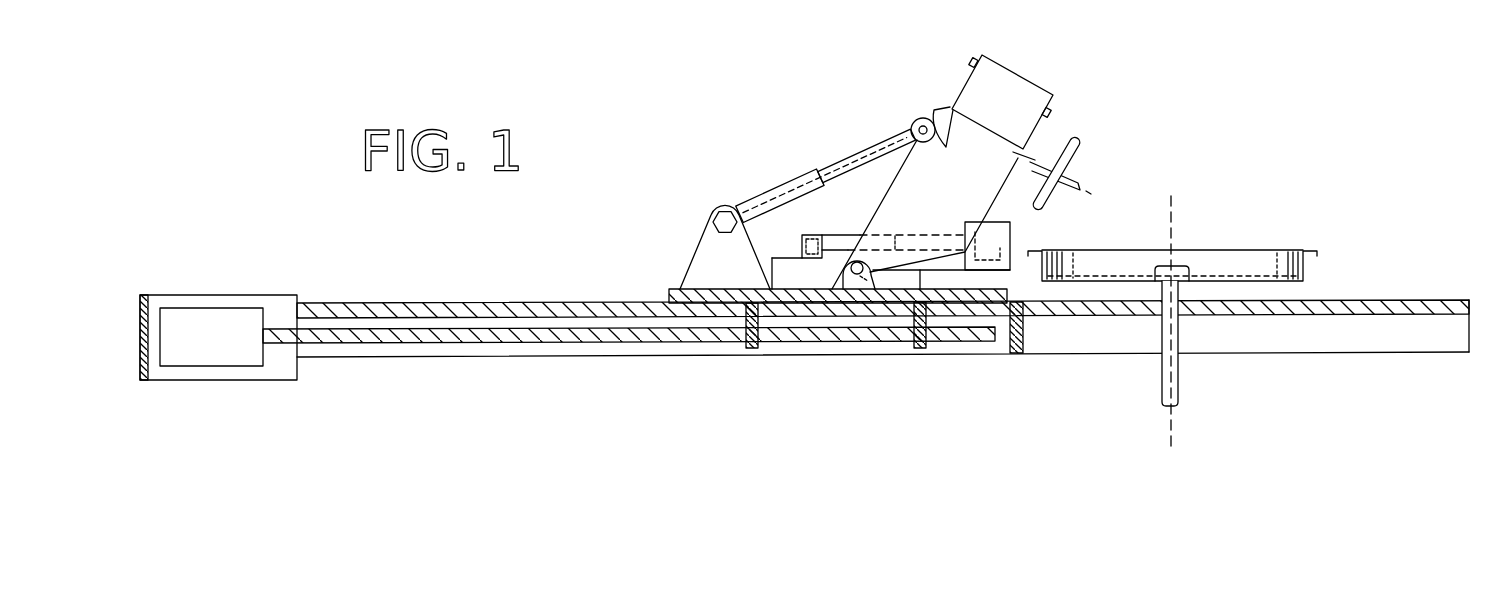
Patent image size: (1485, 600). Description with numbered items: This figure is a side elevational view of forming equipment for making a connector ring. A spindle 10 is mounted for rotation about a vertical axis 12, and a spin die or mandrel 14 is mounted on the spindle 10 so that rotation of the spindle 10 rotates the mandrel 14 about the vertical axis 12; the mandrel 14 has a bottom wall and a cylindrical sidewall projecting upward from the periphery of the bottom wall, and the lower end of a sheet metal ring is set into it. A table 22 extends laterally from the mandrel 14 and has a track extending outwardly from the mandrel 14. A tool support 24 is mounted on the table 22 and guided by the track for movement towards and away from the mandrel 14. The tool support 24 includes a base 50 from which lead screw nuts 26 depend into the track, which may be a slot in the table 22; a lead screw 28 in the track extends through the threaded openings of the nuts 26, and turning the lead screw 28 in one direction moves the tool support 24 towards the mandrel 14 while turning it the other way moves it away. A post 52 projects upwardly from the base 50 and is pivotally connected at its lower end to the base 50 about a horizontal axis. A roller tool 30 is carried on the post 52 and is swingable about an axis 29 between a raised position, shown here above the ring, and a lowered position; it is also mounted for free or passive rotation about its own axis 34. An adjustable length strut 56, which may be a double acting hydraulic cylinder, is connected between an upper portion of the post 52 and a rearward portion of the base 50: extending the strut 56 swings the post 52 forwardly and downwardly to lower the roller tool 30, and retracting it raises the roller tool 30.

The spindle 10 is at (1178, 390).
The vertical axis 12 is at (1173, 258).
The spin die or mandrel 14 is at (1320, 265).
The table 22 is at (469, 298).
The tool support 24 is at (868, 99).
The lead screw nuts 26 is at (727, 356).
The lead screw 28 is at (425, 344).
The axis 29 is at (855, 276).
The roller tool 30 is at (1080, 152).
The axis 34 is at (1078, 183).
The base 50 is at (688, 285).
The post 52 is at (938, 108).
The adjustable length strut 56 is at (782, 182).